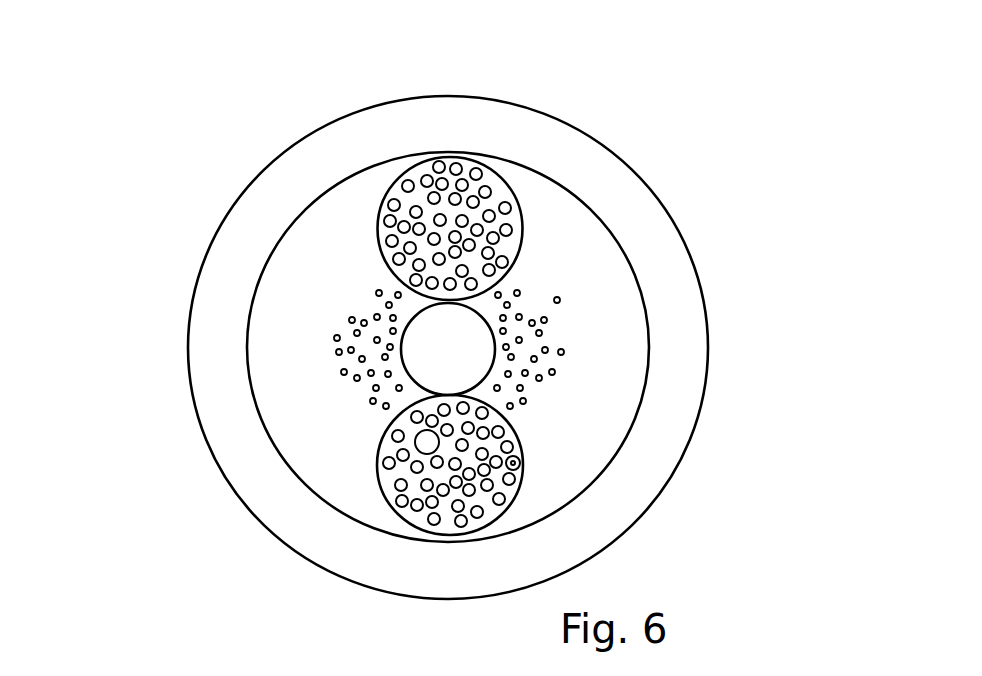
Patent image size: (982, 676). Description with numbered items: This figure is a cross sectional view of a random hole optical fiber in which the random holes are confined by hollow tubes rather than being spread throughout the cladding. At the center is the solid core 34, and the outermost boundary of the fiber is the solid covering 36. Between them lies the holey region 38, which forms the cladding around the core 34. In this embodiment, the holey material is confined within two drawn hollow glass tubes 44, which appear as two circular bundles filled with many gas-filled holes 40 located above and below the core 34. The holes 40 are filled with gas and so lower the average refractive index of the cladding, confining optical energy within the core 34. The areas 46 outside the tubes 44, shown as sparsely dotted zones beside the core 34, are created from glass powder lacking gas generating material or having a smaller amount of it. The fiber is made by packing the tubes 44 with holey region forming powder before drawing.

The core 34 is at (448, 349).
The solid covering 36 is at (497, 130).
The holey region 38 is at (360, 172).
The holes 40 is at (523, 453).
The drawn hollow glass tubes 44 is at (522, 207).
The areas outside the tubes 46 is at (435, 349).